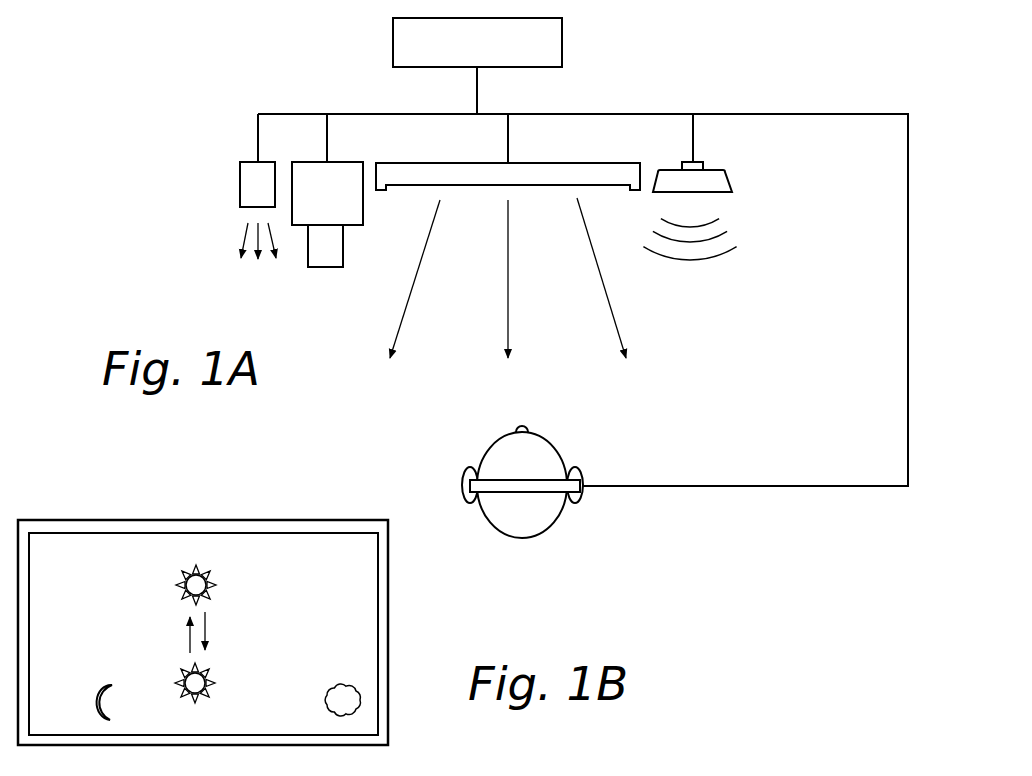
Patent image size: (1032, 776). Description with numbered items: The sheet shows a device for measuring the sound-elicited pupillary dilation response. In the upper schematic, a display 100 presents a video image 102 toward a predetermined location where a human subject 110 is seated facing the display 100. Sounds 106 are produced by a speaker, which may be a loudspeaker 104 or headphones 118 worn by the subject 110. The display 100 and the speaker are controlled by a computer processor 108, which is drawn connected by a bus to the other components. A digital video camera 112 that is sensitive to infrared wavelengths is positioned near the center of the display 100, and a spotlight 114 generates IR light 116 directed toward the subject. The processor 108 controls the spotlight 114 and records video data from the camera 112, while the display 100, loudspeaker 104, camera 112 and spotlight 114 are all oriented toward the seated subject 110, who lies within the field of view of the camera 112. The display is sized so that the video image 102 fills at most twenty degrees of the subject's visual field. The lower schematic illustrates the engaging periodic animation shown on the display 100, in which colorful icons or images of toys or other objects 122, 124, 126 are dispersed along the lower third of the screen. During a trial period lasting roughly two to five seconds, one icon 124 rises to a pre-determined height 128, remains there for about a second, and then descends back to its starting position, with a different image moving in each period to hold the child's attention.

In FIG. 1A, the display 100 is at (483, 161).
In FIG. 1B, the display 100 is at (388, 657).
In FIG. 1A, the video image 102 is at (625, 348).
In FIG. 1A, the loudspeaker 104 is at (730, 176).
In FIG. 1A, the sounds 106 is at (736, 238).
In FIG. 1A, the computer processor 108 is at (498, 54).
In FIG. 1A, the human subject 110 is at (487, 448).
In FIG. 1A, the digital video camera 112 is at (351, 203).
In FIG. 1A, the spotlight 114 is at (240, 183).
In FIG. 1A, the IR light 116 is at (243, 250).
In FIG. 1A, the headphones 118 is at (583, 470).
In FIG. 1B, the icon 122 is at (98, 702).
In FIG. 1B, the icon 124 is at (210, 683).
In FIG. 1B, the icon 126 is at (340, 682).
In FIG. 1B, the pre-determined height 128 is at (211, 585).